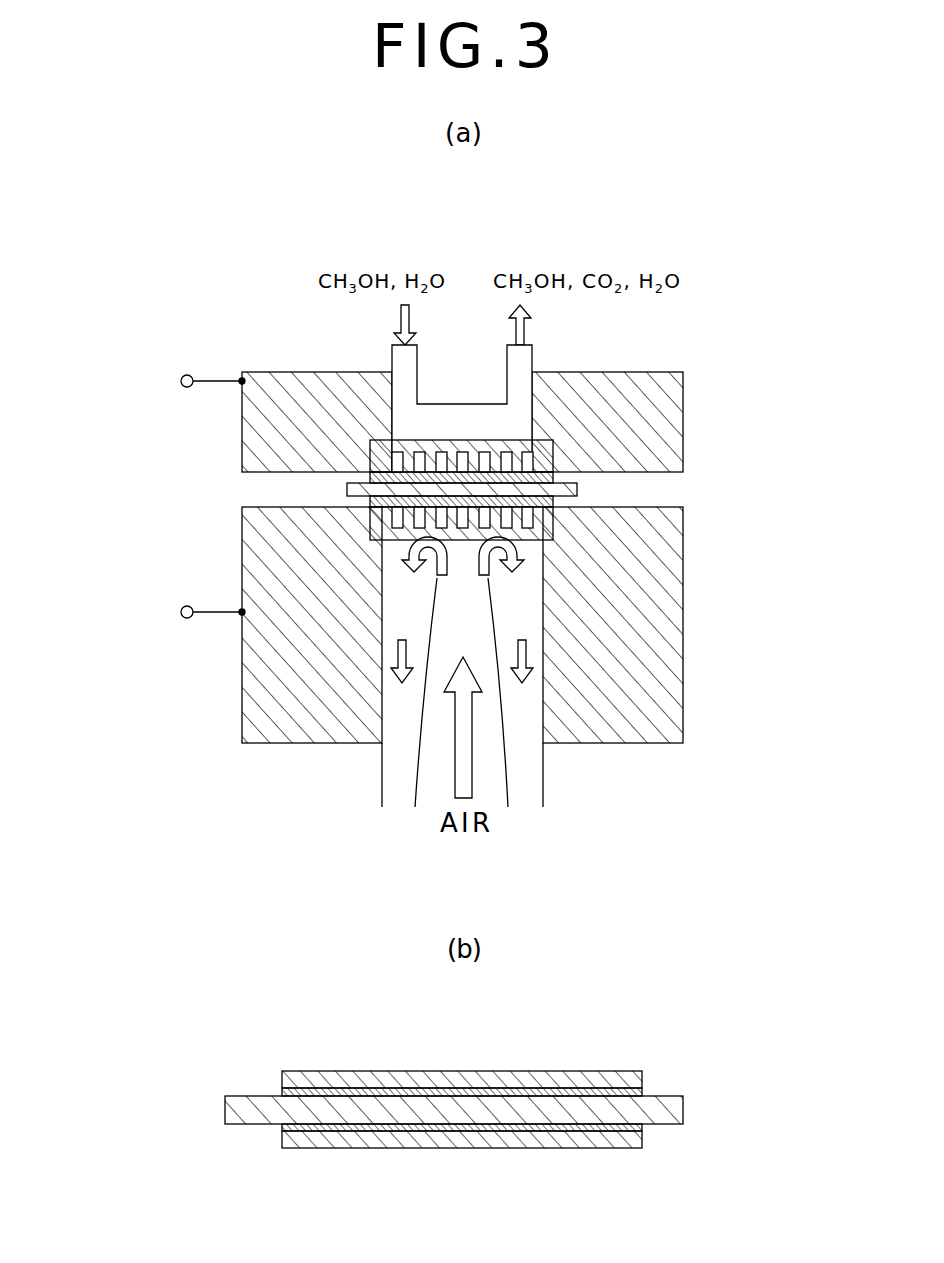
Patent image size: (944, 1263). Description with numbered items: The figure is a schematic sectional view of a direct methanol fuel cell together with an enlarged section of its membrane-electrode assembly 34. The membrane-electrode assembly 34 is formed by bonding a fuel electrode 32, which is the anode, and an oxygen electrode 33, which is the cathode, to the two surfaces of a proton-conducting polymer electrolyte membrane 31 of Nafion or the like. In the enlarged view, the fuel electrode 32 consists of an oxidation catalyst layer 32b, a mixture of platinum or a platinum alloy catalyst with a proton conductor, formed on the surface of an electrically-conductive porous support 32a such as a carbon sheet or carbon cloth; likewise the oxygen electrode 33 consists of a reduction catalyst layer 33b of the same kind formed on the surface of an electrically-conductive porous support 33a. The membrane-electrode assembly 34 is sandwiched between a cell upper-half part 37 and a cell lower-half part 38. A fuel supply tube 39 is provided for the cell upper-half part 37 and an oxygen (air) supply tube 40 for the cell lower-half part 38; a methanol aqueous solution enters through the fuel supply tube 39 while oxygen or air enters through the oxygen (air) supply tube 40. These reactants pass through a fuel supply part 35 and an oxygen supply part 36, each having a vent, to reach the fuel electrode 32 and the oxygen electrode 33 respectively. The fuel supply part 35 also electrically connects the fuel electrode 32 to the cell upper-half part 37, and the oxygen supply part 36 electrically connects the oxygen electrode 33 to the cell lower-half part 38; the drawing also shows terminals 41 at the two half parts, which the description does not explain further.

The proton-conducting polymer electrolyte membrane 31 is at (560, 489).
The fuel electrode 32 is at (560, 478).
The oxygen electrode 33 is at (560, 501).
The membrane-electrode assembly 34 is at (761, 448).
The fuel supply part 35 is at (548, 450).
The oxygen supply part 36 is at (552, 512).
The cell upper-half part 37 is at (660, 388).
The cell lower-half part 38 is at (660, 694).
The fuel supply tube 39 is at (457, 404).
The oxygen (air) supply tube 40 is at (548, 778).
The output terminal 41 is at (214, 378).
The electrically-conductive porous support 32a is at (640, 1080).
The oxidation catalyst layer 32b is at (640, 1092).
The electrically-conductive porous support 33a is at (640, 1140).
The reduction catalyst layer 33b is at (640, 1128).